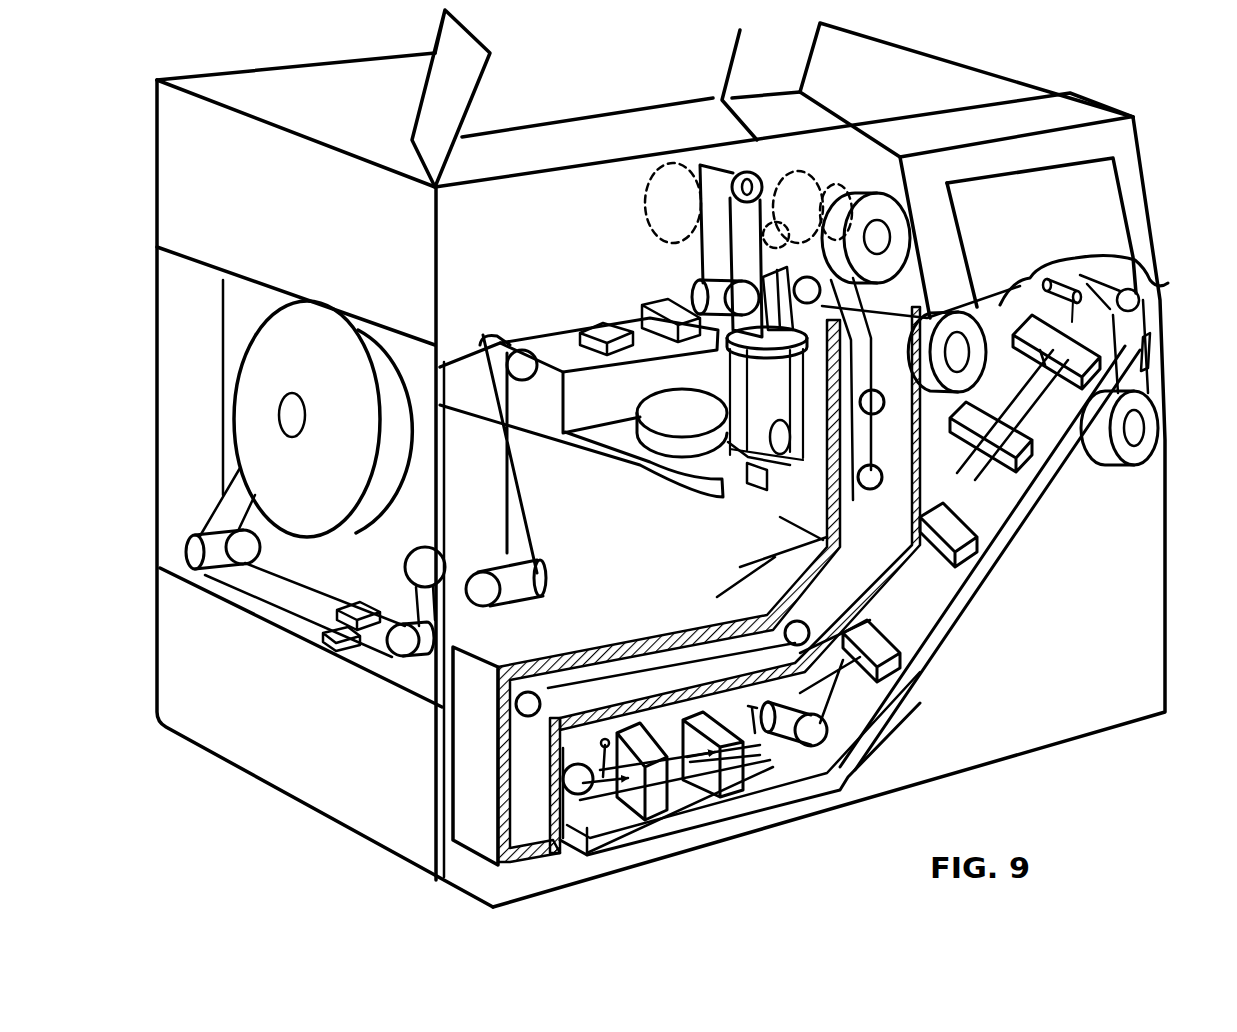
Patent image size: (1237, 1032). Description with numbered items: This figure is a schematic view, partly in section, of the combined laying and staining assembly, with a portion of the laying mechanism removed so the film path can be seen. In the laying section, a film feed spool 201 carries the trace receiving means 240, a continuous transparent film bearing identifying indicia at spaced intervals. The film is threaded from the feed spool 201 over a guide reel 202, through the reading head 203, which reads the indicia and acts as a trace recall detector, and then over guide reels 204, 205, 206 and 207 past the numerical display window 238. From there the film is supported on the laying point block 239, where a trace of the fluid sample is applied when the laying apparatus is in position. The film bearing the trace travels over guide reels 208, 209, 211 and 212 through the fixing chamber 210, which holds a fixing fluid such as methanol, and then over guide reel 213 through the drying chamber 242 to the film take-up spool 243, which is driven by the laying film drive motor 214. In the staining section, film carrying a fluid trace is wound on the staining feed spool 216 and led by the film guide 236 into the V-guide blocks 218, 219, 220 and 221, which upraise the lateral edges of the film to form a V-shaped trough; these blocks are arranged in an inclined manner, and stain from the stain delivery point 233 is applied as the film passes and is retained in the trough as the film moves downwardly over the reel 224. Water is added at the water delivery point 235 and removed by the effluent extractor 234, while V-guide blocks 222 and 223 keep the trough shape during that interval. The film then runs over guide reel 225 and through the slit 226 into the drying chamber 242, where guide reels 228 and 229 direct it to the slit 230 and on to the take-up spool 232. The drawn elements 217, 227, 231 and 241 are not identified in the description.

The film feed spool 201 is at (315, 375).
The guide reel 202 is at (260, 548).
The reading head 203 is at (359, 602).
The guide reel 204 is at (404, 662).
The guide reel 205 is at (413, 553).
The guide reel 206 is at (492, 605).
The guide reel 207 is at (483, 350).
The guide reel 208 is at (707, 273).
The guide reel 209 is at (733, 172).
The fixing chamber 210 is at (735, 322).
The guide reel 211 is at (775, 462).
The guide reel 212 is at (805, 278).
The guide reel 213 is at (875, 415).
The laying film drive motor 214 is at (800, 186).
The staining feed spool 216 is at (1124, 466).
The belt 217 is at (1160, 297).
The V-guide block 218 is at (1072, 382).
The V-guide block 219 is at (1033, 460).
The V-guide block 220 is at (980, 547).
The V-guide block 221 is at (903, 667).
The V-guide block 222 is at (740, 793).
The V-guide block 223 is at (655, 805).
The reel 224 is at (830, 734).
The guide reel 225 is at (618, 785).
The slit 226 is at (563, 781).
The roller 227 is at (541, 704).
The guide reel 228 is at (805, 626).
The guide reel 229 is at (876, 490).
The slit 230 is at (686, 584).
The guide plate 231 is at (760, 773).
The take-up spool 232 is at (966, 352).
The stain delivery point 233 is at (1063, 278).
The effluent extractor 234 is at (600, 726).
The water delivery point 235 is at (735, 691).
The film guide 236 is at (1160, 340).
The numerical display window 238 is at (606, 328).
The laying point block 239 is at (648, 305).
The trace receiving means 240 is at (213, 525).
The tape 241 is at (237, 572).
The drying chamber 242 is at (996, 415).
The film take-up spool 243 is at (870, 194).